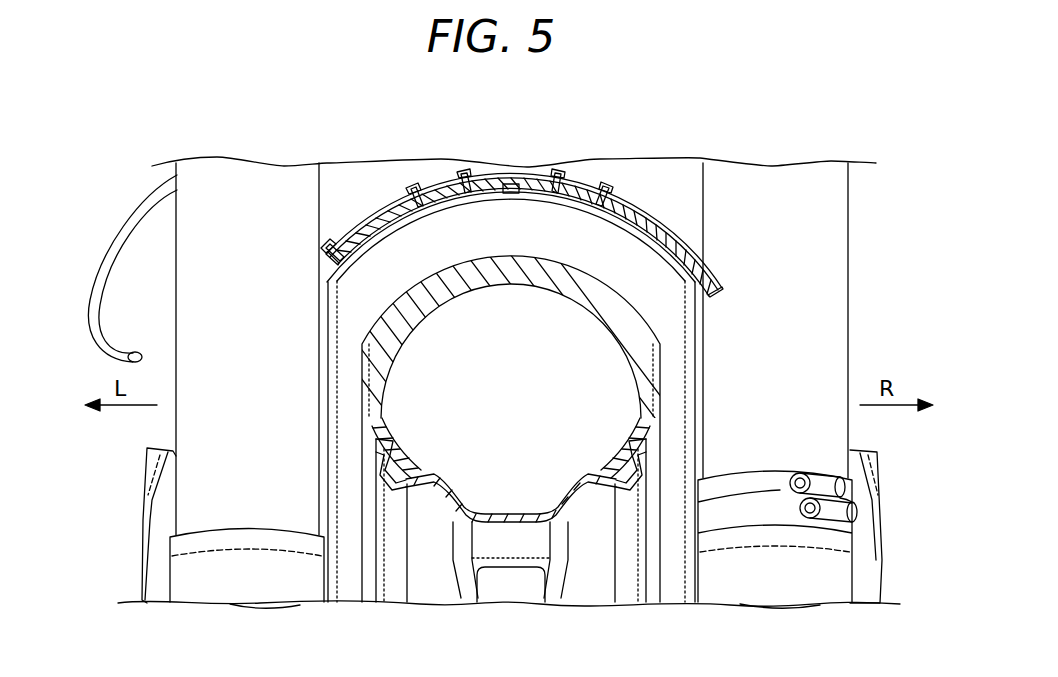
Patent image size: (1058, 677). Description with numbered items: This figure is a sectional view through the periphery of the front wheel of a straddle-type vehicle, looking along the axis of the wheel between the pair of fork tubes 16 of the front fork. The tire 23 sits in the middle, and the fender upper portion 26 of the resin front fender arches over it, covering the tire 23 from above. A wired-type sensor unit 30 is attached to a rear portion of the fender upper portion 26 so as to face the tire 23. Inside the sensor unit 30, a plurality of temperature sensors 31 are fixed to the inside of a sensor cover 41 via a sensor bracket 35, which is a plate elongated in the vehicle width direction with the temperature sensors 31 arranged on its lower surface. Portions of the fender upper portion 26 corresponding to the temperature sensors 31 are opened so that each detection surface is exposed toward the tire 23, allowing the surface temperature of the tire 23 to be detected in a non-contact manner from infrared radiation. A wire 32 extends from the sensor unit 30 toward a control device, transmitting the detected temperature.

The fork tube 16 is at (187, 298).
The tire 23 is at (448, 275).
The fender upper portion 26 is at (437, 180).
The sensor unit 30 is at (647, 197).
The temperature sensor 31 is at (376, 250).
The wire 32 is at (133, 210).
The sensor bracket 35 is at (538, 172).
The sensor cover 41 is at (587, 180).